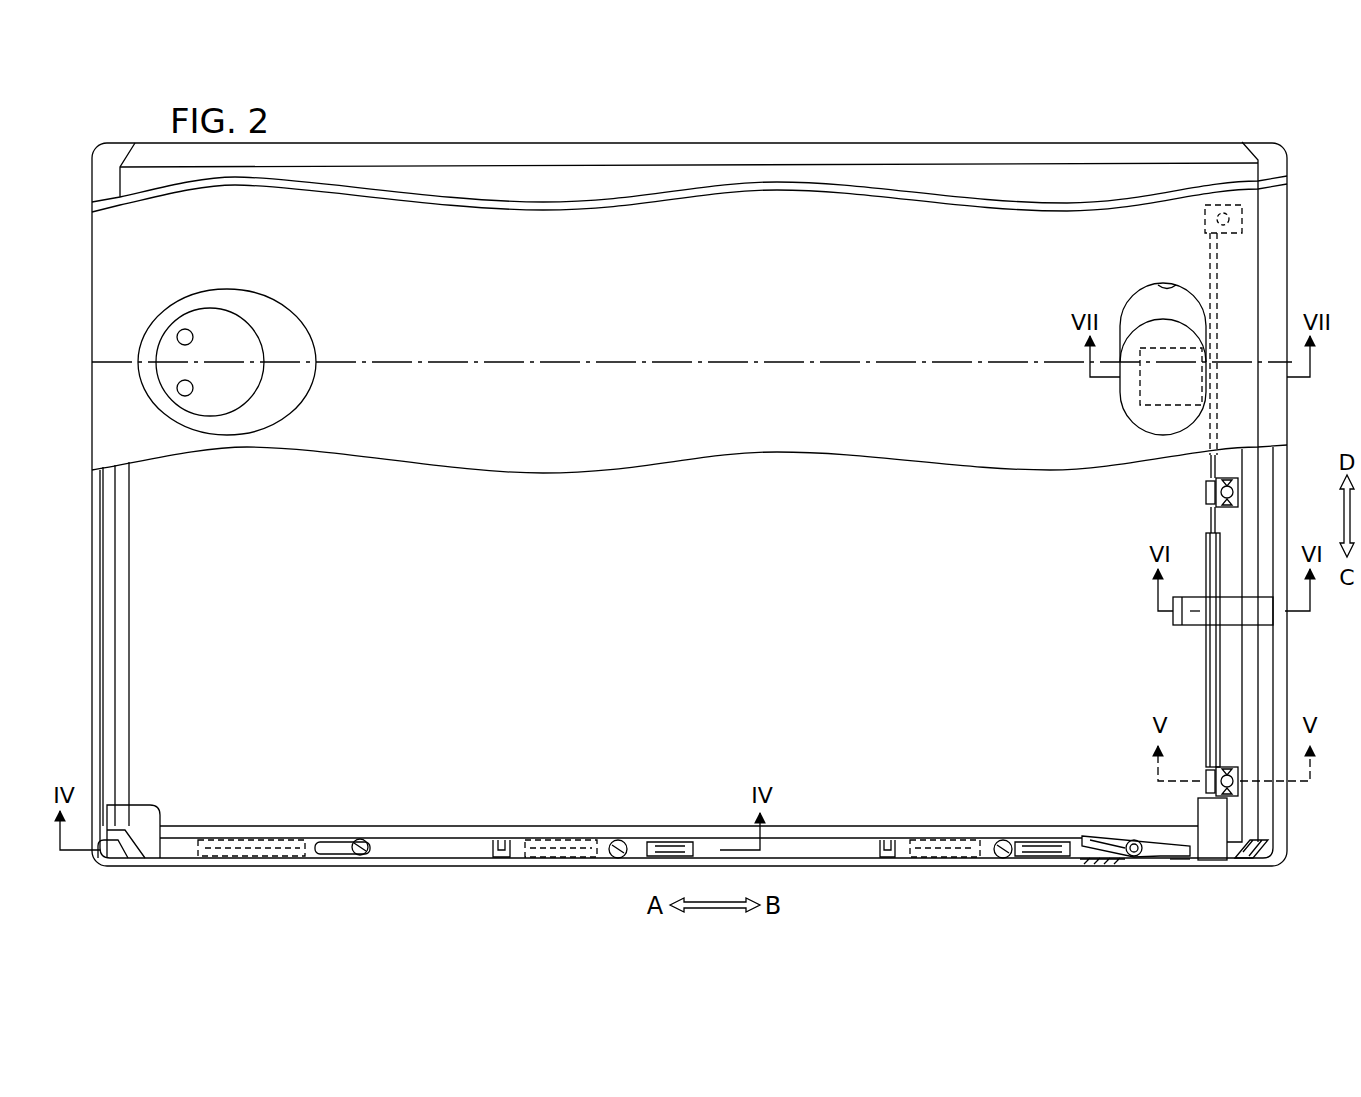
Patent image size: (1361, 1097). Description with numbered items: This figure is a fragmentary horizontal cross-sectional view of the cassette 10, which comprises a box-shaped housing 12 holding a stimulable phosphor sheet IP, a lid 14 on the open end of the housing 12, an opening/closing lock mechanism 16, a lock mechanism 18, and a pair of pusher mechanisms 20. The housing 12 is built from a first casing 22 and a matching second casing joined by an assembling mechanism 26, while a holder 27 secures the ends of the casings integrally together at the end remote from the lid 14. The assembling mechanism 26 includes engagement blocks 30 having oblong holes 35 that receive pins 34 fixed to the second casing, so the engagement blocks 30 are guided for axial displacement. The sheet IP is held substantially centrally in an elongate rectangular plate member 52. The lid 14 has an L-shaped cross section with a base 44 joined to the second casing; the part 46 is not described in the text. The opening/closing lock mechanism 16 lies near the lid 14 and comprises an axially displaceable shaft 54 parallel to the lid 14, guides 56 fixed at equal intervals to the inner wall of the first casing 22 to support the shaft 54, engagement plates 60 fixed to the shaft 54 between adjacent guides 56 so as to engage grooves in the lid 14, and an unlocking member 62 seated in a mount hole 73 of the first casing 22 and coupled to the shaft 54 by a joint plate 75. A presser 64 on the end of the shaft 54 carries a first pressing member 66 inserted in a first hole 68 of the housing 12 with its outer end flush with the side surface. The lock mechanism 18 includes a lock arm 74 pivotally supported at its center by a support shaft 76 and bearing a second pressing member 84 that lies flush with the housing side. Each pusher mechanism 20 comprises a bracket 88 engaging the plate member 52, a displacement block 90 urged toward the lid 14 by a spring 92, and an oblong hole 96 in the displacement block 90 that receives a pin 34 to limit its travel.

The cassette 10 is at (885, 129).
The housing 12 is at (1012, 178).
The lid 14 is at (1264, 258).
The opening/closing lock mechanism 16 is at (1198, 594).
The lock mechanism 18 is at (1128, 862).
The pusher mechanism 20 is at (156, 797).
The first casing 22 is at (566, 181).
The assembling mechanism 26 is at (572, 862).
The holder 27 is at (100, 189).
The engagement block 30 is at (612, 841).
The pin 34 is at (358, 839).
The oblong hole 35 is at (648, 848).
The base 44 is at (1280, 679).
The side wall 46 is at (1280, 420).
The plate member 52 is at (113, 589).
The shaft 54 is at (1212, 689).
The guide 56 is at (1250, 216).
The engagement plate 60 is at (1260, 616).
The unlocking member 62 is at (1152, 417).
The presser 64 is at (1199, 816).
The first pressing member 66 is at (1198, 859).
The first hole 68 is at (1222, 862).
The mount hole 73 is at (1168, 283).
The lock arm 74 is at (1099, 834).
The joint plate 75 is at (1152, 375).
The support shaft 76 is at (1131, 840).
The second pressing member 84 is at (1100, 862).
The bracket 88 is at (135, 840).
The displacement block 90 is at (172, 856).
The spring 92 is at (272, 858).
The oblong hole 96 is at (326, 856).
The stimulable phosphor sheet IP is at (170, 549).